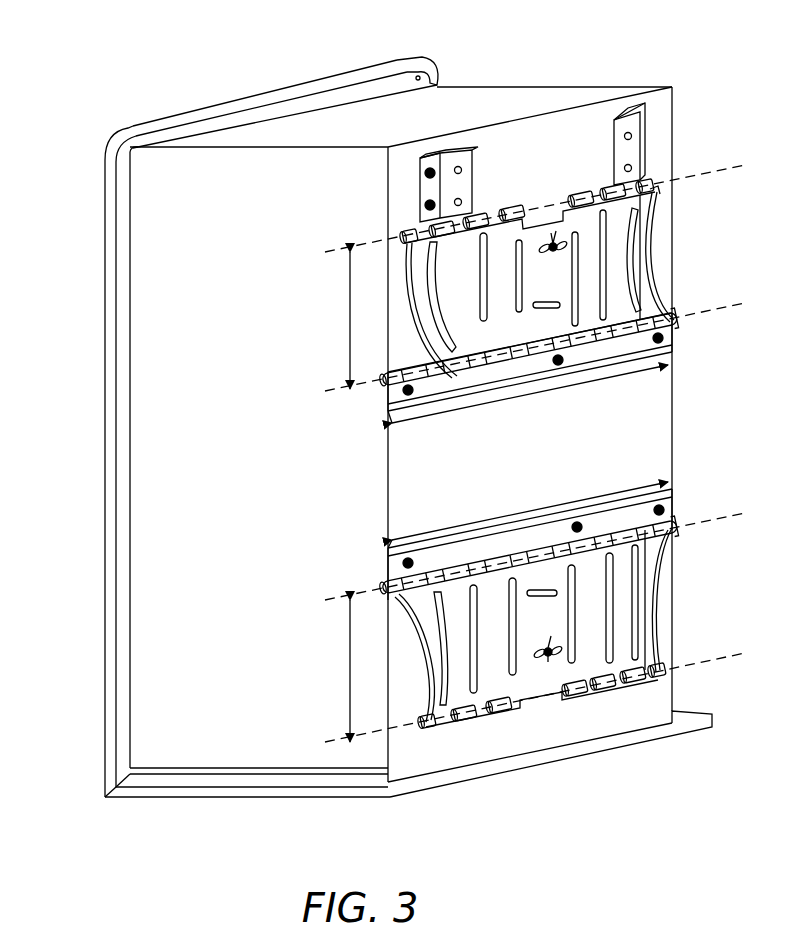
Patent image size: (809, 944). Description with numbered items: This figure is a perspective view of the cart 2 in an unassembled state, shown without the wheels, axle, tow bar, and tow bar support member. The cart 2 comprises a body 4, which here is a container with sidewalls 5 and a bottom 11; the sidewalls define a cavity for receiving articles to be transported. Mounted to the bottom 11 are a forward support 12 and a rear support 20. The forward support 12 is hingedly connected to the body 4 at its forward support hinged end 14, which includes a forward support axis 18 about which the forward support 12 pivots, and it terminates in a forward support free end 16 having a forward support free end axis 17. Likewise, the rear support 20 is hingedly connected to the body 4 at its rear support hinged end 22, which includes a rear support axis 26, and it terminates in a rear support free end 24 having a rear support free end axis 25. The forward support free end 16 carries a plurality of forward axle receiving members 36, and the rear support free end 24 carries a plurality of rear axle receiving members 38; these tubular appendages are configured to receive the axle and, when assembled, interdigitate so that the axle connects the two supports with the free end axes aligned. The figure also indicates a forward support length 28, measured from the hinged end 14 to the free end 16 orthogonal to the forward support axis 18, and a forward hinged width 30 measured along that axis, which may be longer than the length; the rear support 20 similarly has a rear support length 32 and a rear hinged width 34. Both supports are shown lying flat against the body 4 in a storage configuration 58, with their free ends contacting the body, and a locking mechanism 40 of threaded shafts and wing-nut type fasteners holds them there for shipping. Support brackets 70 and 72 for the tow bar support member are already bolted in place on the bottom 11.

The cart 2 is at (62, 78).
The body 4 is at (105, 502).
The sidewalls 5 is at (328, 120).
The bottom 11 is at (655, 390).
The forward support 12 is at (618, 262).
The forward support hinged end 14 is at (655, 350).
The forward support free end 16 is at (654, 188).
The forward support free end axis 17 is at (338, 252).
The forward support axis 18 is at (338, 389).
The rear support 20 is at (622, 610).
The rear support hinged end 22 is at (676, 525).
The rear support free end 24 is at (637, 680).
The rear support free end axis 25 is at (338, 740).
The rear support axis 26 is at (338, 597).
The forward support length 28 is at (350, 310).
The forward hinged width 30 is at (492, 407).
The rear support length 32 is at (350, 652).
The rear hinged width 34 is at (508, 513).
The forward axle receiving members 36 is at (507, 208).
The rear axle receiving members 38 is at (461, 727).
The locking mechanism 40 is at (566, 247).
The storage configuration 58 is at (663, 238).
The support bracket 70 is at (425, 183).
The support bracket 72 is at (622, 125).